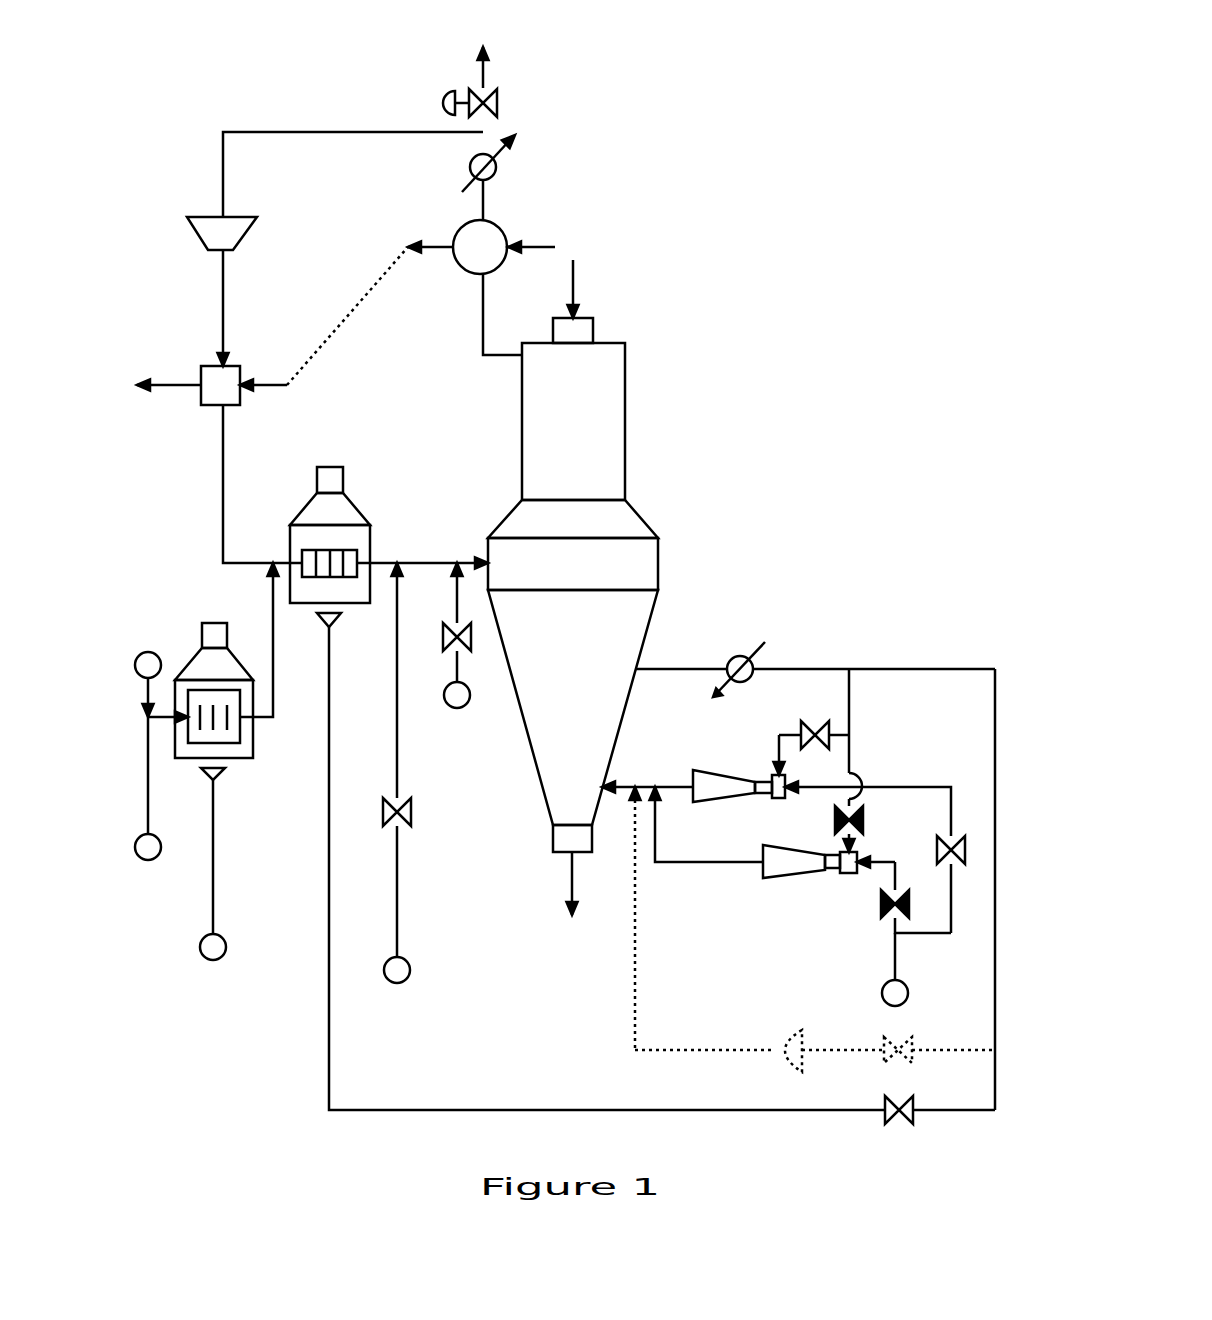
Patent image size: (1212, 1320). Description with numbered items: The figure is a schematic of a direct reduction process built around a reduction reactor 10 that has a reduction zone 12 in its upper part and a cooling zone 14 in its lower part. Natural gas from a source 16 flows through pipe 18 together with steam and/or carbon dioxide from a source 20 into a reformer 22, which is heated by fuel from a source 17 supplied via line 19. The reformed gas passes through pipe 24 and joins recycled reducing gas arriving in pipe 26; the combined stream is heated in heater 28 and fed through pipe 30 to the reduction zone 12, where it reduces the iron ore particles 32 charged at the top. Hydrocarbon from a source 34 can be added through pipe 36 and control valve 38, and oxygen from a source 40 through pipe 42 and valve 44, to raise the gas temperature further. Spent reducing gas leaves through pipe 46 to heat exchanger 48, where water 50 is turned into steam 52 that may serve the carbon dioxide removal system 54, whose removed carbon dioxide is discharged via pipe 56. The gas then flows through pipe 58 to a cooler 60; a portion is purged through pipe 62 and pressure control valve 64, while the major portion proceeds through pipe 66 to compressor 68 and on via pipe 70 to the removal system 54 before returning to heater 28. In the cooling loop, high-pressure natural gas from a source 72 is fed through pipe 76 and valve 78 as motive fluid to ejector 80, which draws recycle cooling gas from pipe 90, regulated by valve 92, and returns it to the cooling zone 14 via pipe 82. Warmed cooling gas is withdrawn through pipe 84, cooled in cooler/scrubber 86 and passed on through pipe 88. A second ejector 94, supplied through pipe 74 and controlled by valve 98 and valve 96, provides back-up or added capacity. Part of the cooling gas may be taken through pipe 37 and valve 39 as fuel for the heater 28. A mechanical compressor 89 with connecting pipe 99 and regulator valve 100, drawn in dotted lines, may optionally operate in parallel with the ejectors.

The reduction reactor 10 is at (661, 386).
The reduction zone 12 is at (593, 424).
The cooling zone 14 is at (589, 734).
The natural gas source 16 is at (148, 860).
The fuel source 17 is at (224, 942).
The pipe 18 is at (148, 782).
The line 19 is at (213, 812).
The steam and/or CO2 source 20 is at (162, 683).
The reformer 22 is at (198, 626).
The pipe 24 is at (273, 700).
The pipe 26 is at (223, 487).
The heater 28 is at (335, 503).
The pipe 30 is at (387, 560).
The iron ore particles 32 is at (577, 300).
The hydrocarbon source 34 is at (398, 978).
The pipe 36 is at (397, 757).
The pipe 37 is at (638, 868).
The control valve 38 is at (405, 806).
The valve 39 is at (912, 1095).
The oxygen source 40 is at (457, 710).
The pipe 42 is at (457, 610).
The valve 44 is at (447, 646).
The pipe 46 is at (483, 322).
The heat exchanger 48 is at (488, 235).
The water 50 is at (532, 247).
The steam 52 is at (265, 385).
The CO2 removal system 54 is at (210, 405).
The pipe 56 is at (160, 385).
The pipe 58 is at (483, 205).
The cooler 60 is at (496, 165).
The pipe 62 is at (483, 70).
The pressure control valve 64 is at (495, 109).
The pipe 66 is at (360, 132).
The compressor 68 is at (205, 215).
The pipe 70 is at (223, 313).
The high-pressure natural gas source 72 is at (883, 990).
The pipe 74 is at (893, 972).
The pipe 76 is at (914, 786).
The valve 78 is at (937, 861).
The ejector 80 is at (740, 773).
The pipe 82 is at (683, 783).
The pipe 84 is at (667, 669).
The cooler/scrubber 86 is at (742, 647).
The pipe 88 is at (853, 726).
The mechanical compressor 89 is at (797, 1033).
The pipe 90 is at (777, 756).
The valve 92 is at (826, 722).
The second ejector 94 is at (790, 843).
The valve 96 is at (858, 832).
The valve 98 is at (881, 888).
The connecting pipe 99 is at (638, 982).
The regulator valve 100 is at (905, 1043).